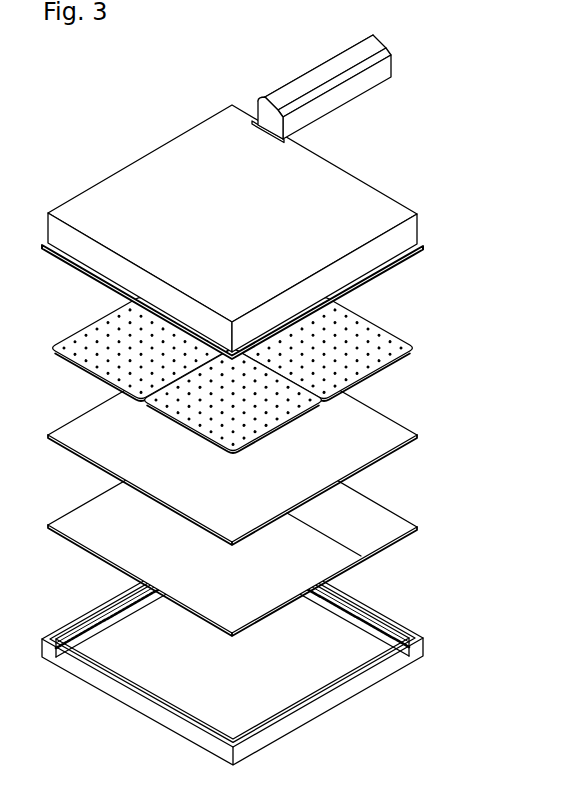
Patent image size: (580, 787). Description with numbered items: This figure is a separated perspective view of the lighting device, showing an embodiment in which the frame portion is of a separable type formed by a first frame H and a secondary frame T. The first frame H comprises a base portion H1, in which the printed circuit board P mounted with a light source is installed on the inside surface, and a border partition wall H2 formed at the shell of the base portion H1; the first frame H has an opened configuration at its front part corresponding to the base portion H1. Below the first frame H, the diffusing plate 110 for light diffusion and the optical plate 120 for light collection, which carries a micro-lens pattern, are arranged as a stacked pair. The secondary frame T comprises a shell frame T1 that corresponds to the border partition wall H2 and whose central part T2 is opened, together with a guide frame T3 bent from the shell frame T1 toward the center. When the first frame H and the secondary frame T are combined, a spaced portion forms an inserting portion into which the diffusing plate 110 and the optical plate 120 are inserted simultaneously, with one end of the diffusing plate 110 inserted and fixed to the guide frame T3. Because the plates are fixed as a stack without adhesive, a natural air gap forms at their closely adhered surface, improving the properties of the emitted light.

The first frame H is at (261, 197).
The base portion H1 is at (234, 193).
The border partition wall H2 is at (412, 233).
The printed circuit board P is at (387, 334).
The diffusing plate 110 is at (402, 431).
The optical plate 120 is at (377, 516).
The secondary frame T is at (232, 647).
The shell frame T1 is at (305, 716).
The central part T2 is at (315, 673).
The guide frame T3 is at (367, 634).